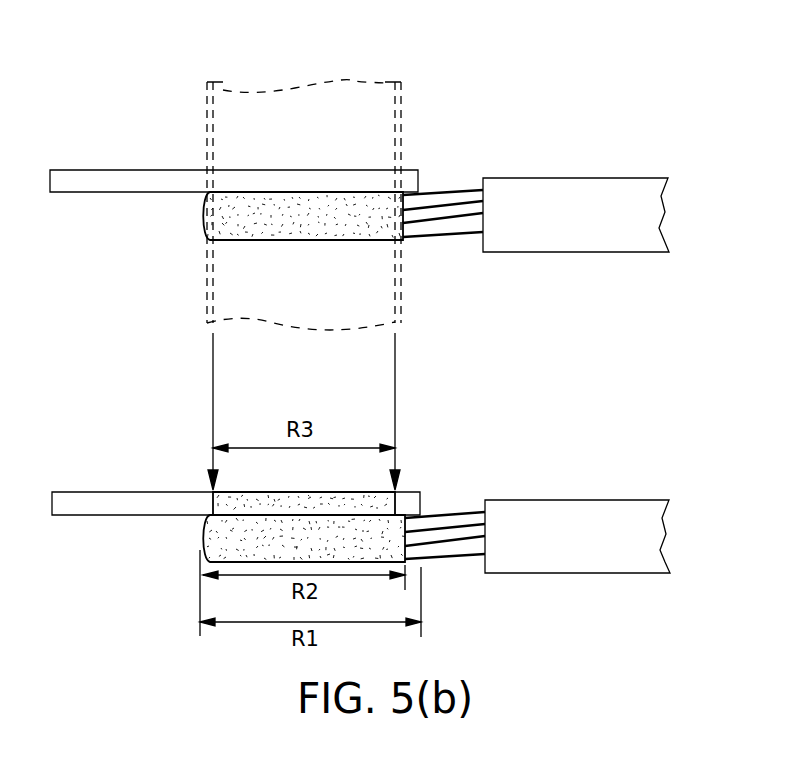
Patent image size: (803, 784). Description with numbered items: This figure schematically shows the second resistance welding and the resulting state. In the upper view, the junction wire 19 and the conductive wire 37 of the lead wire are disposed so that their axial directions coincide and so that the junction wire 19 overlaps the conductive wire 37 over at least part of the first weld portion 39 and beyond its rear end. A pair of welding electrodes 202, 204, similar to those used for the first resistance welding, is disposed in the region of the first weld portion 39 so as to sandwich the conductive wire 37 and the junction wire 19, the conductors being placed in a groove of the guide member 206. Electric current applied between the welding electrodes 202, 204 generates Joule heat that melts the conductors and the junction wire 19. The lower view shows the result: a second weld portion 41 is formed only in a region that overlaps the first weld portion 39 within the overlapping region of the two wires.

The junction wire 19 is at (128, 168).
The conductive wire 37 is at (418, 242).
The first weld portion 39 is at (203, 212).
The second weld portion 41 is at (398, 500).
The welding electrode 202 is at (242, 88).
The welding electrode 204 is at (253, 318).
The guide member 206 is at (202, 133).